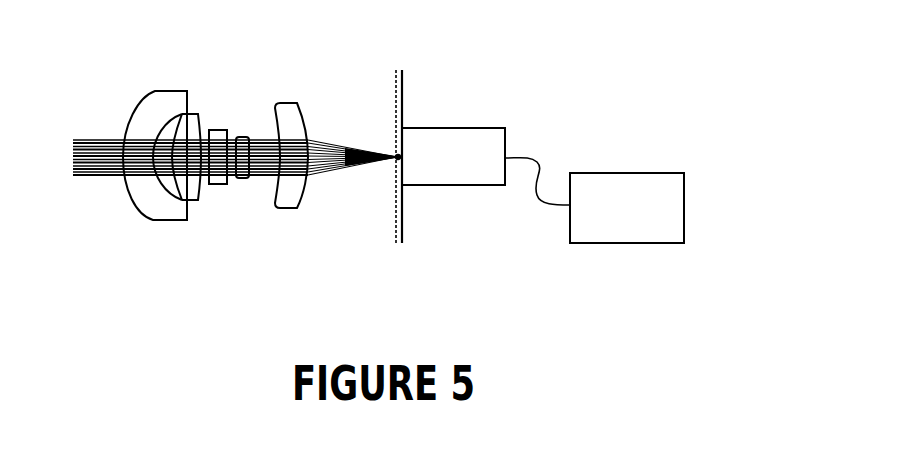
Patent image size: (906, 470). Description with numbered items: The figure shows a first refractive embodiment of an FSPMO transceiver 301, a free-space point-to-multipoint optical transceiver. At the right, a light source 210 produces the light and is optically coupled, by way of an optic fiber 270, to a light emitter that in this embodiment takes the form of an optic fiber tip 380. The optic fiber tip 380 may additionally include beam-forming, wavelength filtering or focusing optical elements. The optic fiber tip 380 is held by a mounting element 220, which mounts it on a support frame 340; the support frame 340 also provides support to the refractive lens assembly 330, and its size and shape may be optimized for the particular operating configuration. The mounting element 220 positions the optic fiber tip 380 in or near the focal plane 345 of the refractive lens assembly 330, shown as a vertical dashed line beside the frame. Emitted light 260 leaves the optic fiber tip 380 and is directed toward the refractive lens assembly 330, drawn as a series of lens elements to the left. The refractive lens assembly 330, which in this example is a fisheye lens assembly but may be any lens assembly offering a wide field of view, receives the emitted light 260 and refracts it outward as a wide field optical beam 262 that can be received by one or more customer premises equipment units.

The FSPMO transceiver 301 is at (662, 45).
The refractive lens assembly 330 is at (236, 78).
The wide field optical beam 262 is at (101, 174).
The emitted light 260 is at (330, 152).
The optic fiber tip 380 is at (389, 165).
The focal plane 345 is at (396, 232).
The support frame 340 is at (402, 228).
The mounting element 220 is at (505, 130).
The optic fiber 270 is at (549, 160).
The light source 210 is at (684, 192).